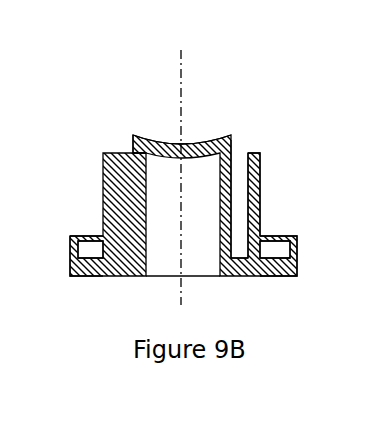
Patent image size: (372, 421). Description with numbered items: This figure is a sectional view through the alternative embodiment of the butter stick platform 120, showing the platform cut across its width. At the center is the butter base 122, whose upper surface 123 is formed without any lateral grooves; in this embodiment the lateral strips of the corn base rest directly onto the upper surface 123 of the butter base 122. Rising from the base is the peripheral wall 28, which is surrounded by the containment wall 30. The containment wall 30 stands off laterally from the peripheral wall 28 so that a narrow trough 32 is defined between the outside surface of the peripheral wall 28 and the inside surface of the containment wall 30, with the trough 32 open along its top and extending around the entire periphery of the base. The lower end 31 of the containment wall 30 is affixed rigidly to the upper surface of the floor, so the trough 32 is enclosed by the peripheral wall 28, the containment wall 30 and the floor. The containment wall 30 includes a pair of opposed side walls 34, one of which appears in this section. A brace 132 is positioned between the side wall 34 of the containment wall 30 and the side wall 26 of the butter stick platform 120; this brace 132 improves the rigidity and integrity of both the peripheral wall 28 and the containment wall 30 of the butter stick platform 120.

The butter stick platform 120 is at (227, 58).
The butter base 122 is at (205, 137).
The upper surface 123 is at (156, 137).
The brace 132 is at (118, 147).
The lower end 31 is at (106, 188).
The side wall 34 is at (103, 205).
The peripheral wall 28 is at (235, 188).
The containment wall 30 is at (263, 193).
The side wall 26 is at (236, 224).
The trough 32 is at (238, 240).